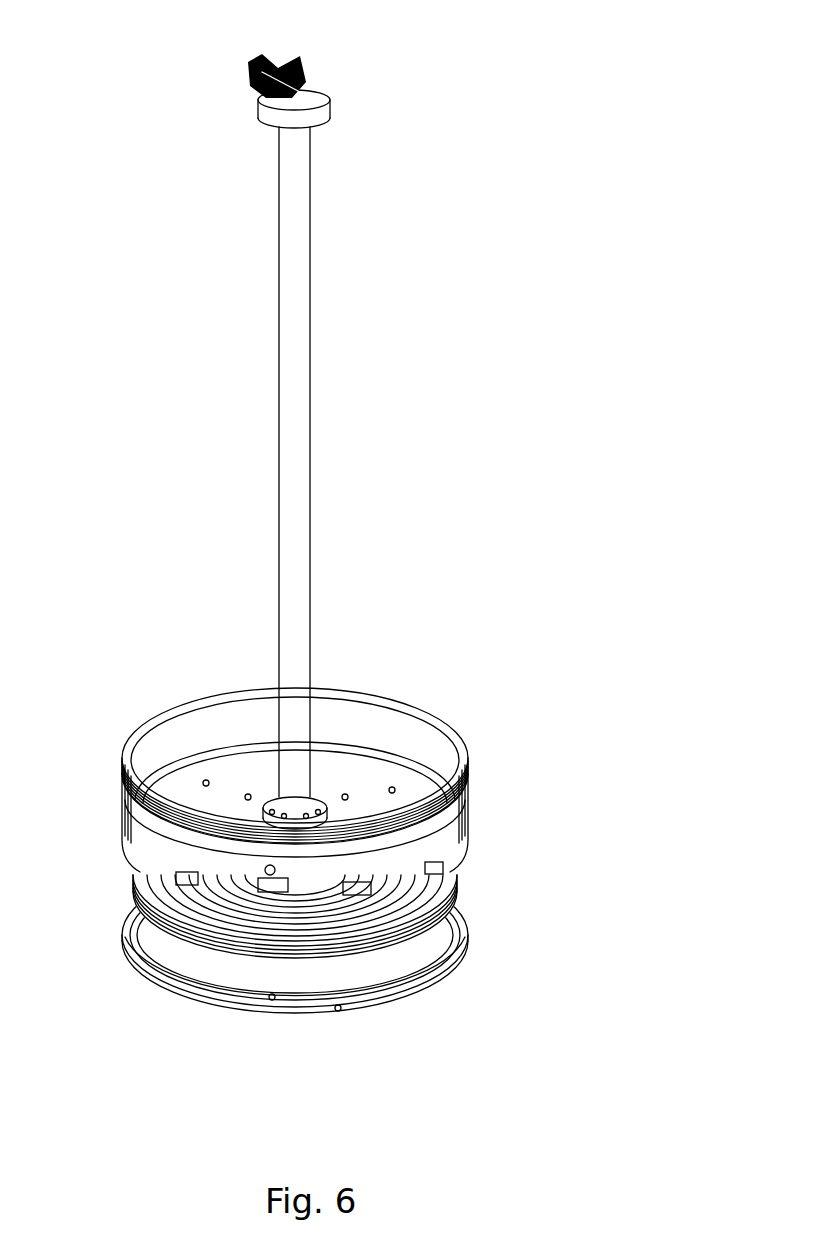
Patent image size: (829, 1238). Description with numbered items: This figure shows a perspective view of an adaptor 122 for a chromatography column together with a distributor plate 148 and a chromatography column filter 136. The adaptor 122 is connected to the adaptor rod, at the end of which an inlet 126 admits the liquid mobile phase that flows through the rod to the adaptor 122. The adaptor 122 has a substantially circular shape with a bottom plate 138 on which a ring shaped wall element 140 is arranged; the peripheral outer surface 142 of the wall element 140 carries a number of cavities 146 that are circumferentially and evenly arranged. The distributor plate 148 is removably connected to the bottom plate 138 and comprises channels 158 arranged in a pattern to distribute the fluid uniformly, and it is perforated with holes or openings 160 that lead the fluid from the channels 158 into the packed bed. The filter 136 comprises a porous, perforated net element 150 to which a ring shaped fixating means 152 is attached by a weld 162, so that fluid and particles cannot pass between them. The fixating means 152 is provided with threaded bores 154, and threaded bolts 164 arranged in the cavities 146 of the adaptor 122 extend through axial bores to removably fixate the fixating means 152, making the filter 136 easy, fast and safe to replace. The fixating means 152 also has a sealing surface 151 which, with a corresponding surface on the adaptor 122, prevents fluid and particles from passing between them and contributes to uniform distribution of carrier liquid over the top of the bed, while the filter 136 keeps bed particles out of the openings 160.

The inlet 126 is at (255, 73).
The adaptor 122 is at (420, 712).
The ring shaped wall element 140 is at (470, 789).
The peripheral outer surface 142 is at (465, 827).
The bottom plate 138 is at (346, 770).
The fixating means 152 is at (206, 782).
The cavities 146 is at (443, 887).
The distributor plate 148 is at (405, 947).
The threaded bolts 164 is at (436, 862).
The threaded bore 154 is at (134, 905).
The channels 158 is at (352, 955).
The holes or openings 160 is at (325, 957).
The weld 162 is at (338, 1009).
The chromatography column filter 136 is at (200, 1004).
The net element 150 is at (170, 991).
The sealing surface 151 is at (135, 967).